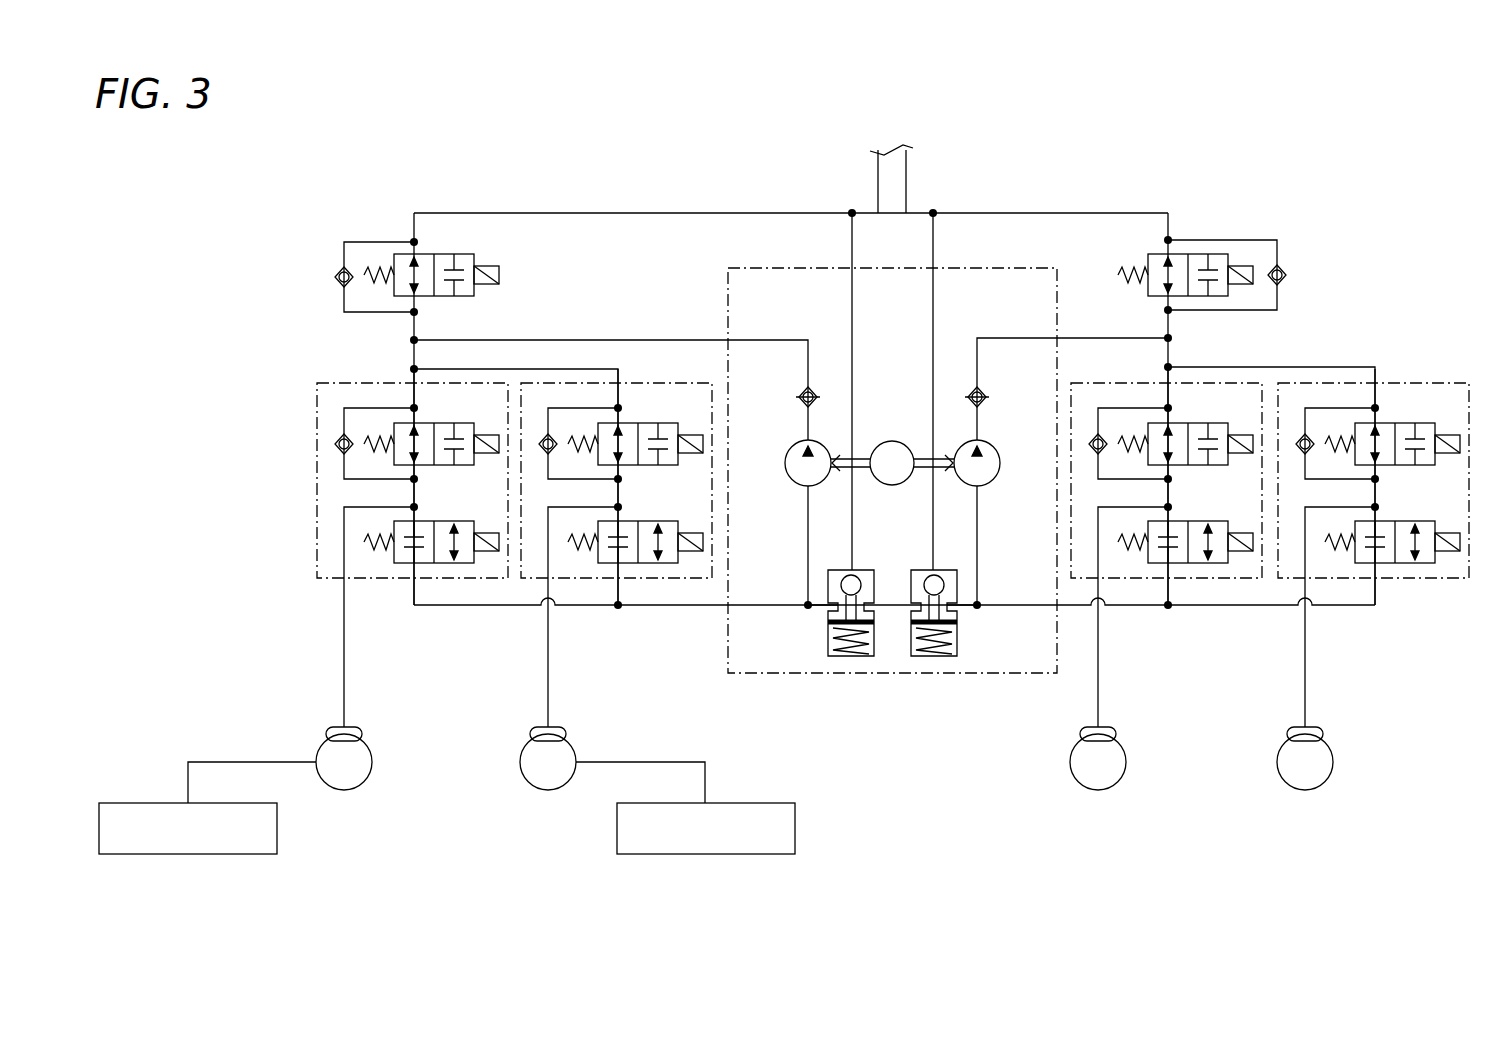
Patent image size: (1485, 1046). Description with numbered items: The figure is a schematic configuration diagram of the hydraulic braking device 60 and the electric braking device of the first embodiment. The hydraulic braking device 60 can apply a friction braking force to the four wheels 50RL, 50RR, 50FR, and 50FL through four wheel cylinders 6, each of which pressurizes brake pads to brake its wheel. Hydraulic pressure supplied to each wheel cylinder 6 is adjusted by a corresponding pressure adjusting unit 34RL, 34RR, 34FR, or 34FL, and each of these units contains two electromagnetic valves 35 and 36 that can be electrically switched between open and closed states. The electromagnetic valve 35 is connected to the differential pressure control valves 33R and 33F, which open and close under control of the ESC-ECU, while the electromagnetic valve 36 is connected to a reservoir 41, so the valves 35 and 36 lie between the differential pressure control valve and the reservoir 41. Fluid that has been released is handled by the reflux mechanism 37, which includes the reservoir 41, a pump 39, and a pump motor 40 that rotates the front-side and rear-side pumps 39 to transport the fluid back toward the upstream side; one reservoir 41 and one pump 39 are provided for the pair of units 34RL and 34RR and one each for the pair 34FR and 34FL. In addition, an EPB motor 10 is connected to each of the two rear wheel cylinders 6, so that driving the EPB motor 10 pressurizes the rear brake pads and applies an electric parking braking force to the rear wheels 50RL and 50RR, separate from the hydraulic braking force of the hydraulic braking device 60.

The wheel cylinder 6 is at (358, 727).
The EPB motor 10 is at (220, 803).
The differential pressure control valve 33R is at (458, 250).
The differential pressure control valve 33F is at (1160, 251).
The pressure adjusting unit 34RL is at (333, 384).
The pressure adjusting unit 34RR is at (633, 384).
The pressure adjusting unit 34FR is at (1083, 385).
The pressure adjusting unit 34FL is at (1390, 385).
The electromagnetic valve 35 is at (424, 424).
The electromagnetic valve 36 is at (424, 522).
The reflux mechanism 37 is at (940, 674).
The pump 39 is at (798, 484).
The pump motor 40 is at (892, 485).
The reservoir 41 is at (827, 638).
The wheel 50RL is at (350, 776).
The wheel 50RR is at (554, 776).
The wheel 50FR is at (1104, 776).
The wheel 50FL is at (1311, 776).
The hydraulic braking device 60 is at (1242, 176).